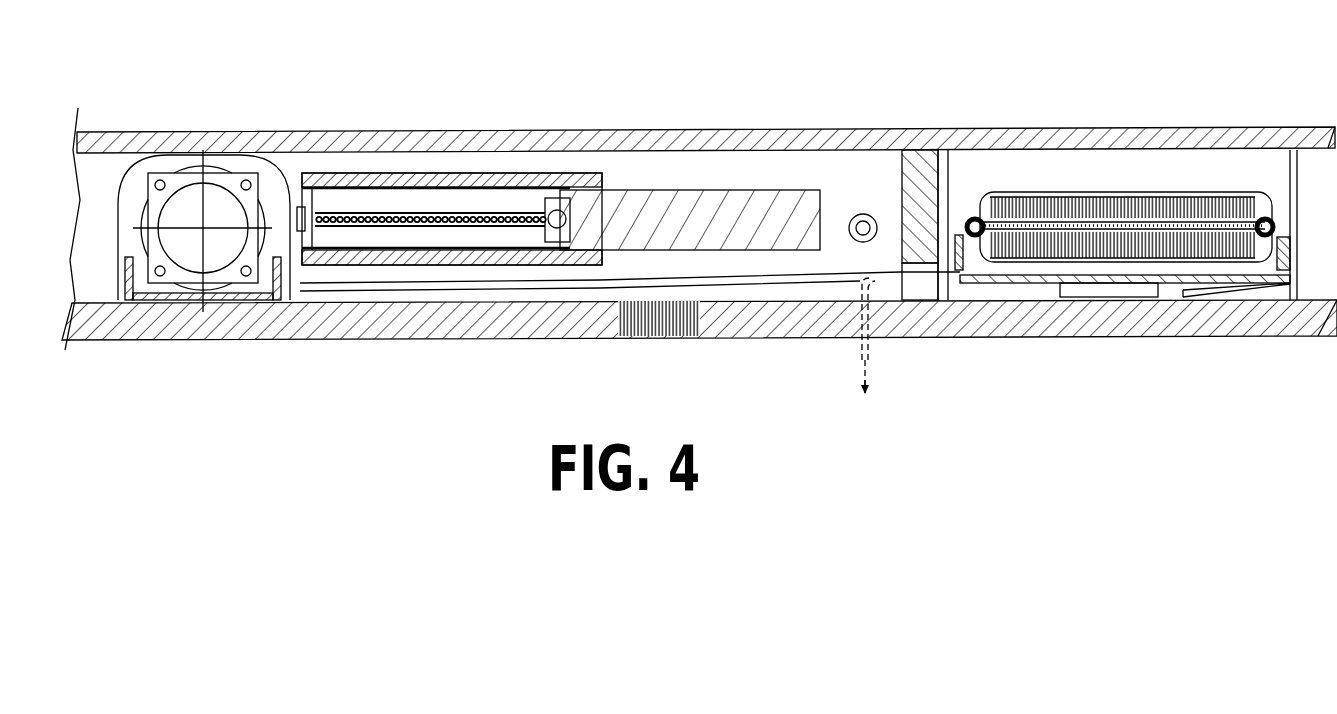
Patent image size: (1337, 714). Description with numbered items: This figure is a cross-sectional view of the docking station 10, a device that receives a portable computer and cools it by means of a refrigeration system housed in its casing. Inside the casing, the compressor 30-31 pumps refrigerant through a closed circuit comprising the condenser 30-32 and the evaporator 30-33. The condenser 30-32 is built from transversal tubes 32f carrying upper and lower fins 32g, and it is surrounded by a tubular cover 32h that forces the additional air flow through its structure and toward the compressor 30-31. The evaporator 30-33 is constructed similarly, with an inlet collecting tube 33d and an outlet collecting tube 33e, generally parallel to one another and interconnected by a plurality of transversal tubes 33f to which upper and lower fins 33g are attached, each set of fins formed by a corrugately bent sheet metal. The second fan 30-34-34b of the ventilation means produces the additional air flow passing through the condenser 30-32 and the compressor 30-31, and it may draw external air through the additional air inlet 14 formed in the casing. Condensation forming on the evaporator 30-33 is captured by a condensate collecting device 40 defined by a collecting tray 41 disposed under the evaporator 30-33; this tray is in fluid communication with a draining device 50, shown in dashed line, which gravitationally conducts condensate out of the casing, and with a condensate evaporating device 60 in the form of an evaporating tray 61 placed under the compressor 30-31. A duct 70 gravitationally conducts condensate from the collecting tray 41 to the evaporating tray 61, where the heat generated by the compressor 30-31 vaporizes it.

The docking station 10 is at (598, 100).
The additional air inlet 14 is at (672, 343).
The compressor 30-31 is at (188, 206).
The condenser 30-32 is at (432, 230).
The transversal tubes 32f is at (452, 212).
The upper and lower fins 32g is at (398, 205).
The tubular cover 32h is at (335, 178).
The evaporator 30-33 is at (1090, 214).
The inlet collecting tube 33d is at (1270, 201).
The outlet collecting tube 33e is at (972, 201).
The transversal tubes 33f is at (1138, 224).
The upper and lower fins 33g is at (1165, 186).
The second fan 30-34-34b is at (648, 184).
The condensate collecting device 40 is at (1296, 243).
The collecting tray 41 is at (1158, 292).
The draining device 50 is at (880, 348).
The condensate evaporating device 60 is at (112, 265).
The evaporating tray 61 is at (237, 300).
The duct 70 is at (758, 262).